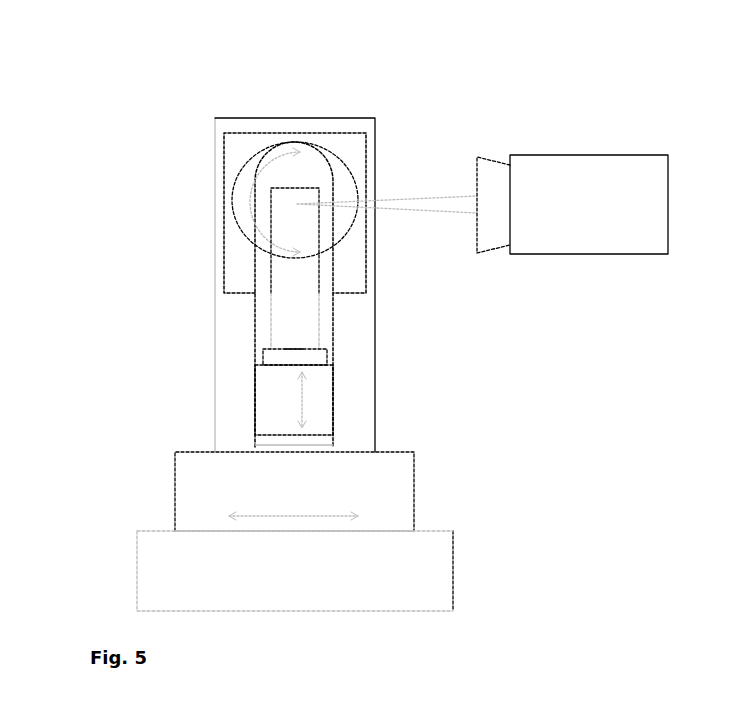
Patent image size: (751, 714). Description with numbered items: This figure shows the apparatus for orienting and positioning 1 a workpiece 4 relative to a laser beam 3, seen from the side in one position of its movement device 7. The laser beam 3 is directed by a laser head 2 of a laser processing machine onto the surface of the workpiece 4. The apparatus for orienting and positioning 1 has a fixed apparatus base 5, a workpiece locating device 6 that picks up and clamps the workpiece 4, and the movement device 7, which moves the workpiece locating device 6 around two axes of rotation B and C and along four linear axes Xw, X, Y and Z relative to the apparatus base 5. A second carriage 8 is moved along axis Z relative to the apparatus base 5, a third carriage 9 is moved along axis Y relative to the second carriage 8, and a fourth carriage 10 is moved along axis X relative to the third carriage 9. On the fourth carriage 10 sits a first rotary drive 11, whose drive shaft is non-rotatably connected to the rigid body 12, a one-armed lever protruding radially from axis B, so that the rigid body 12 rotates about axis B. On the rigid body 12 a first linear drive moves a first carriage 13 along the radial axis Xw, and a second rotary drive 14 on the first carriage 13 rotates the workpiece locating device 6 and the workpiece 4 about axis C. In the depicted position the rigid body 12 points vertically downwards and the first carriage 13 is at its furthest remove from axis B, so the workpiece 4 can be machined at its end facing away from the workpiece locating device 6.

The apparatus for orienting and positioning 1 is at (186, 87).
The laser head 2 is at (607, 183).
The laser beam 3 is at (420, 202).
The workpiece 4 is at (303, 300).
The apparatus base 5 is at (420, 572).
The workpiece locating device 6 is at (298, 348).
The movement device 7 is at (127, 427).
The second carriage 8 is at (390, 482).
The third carriage 9 is at (233, 370).
The fourth carriage 10 is at (240, 273).
The first rotary drive 11 is at (340, 160).
The rigid body 12 is at (267, 253).
The first carriage 13 is at (320, 410).
The second rotary drive 14 is at (315, 357).